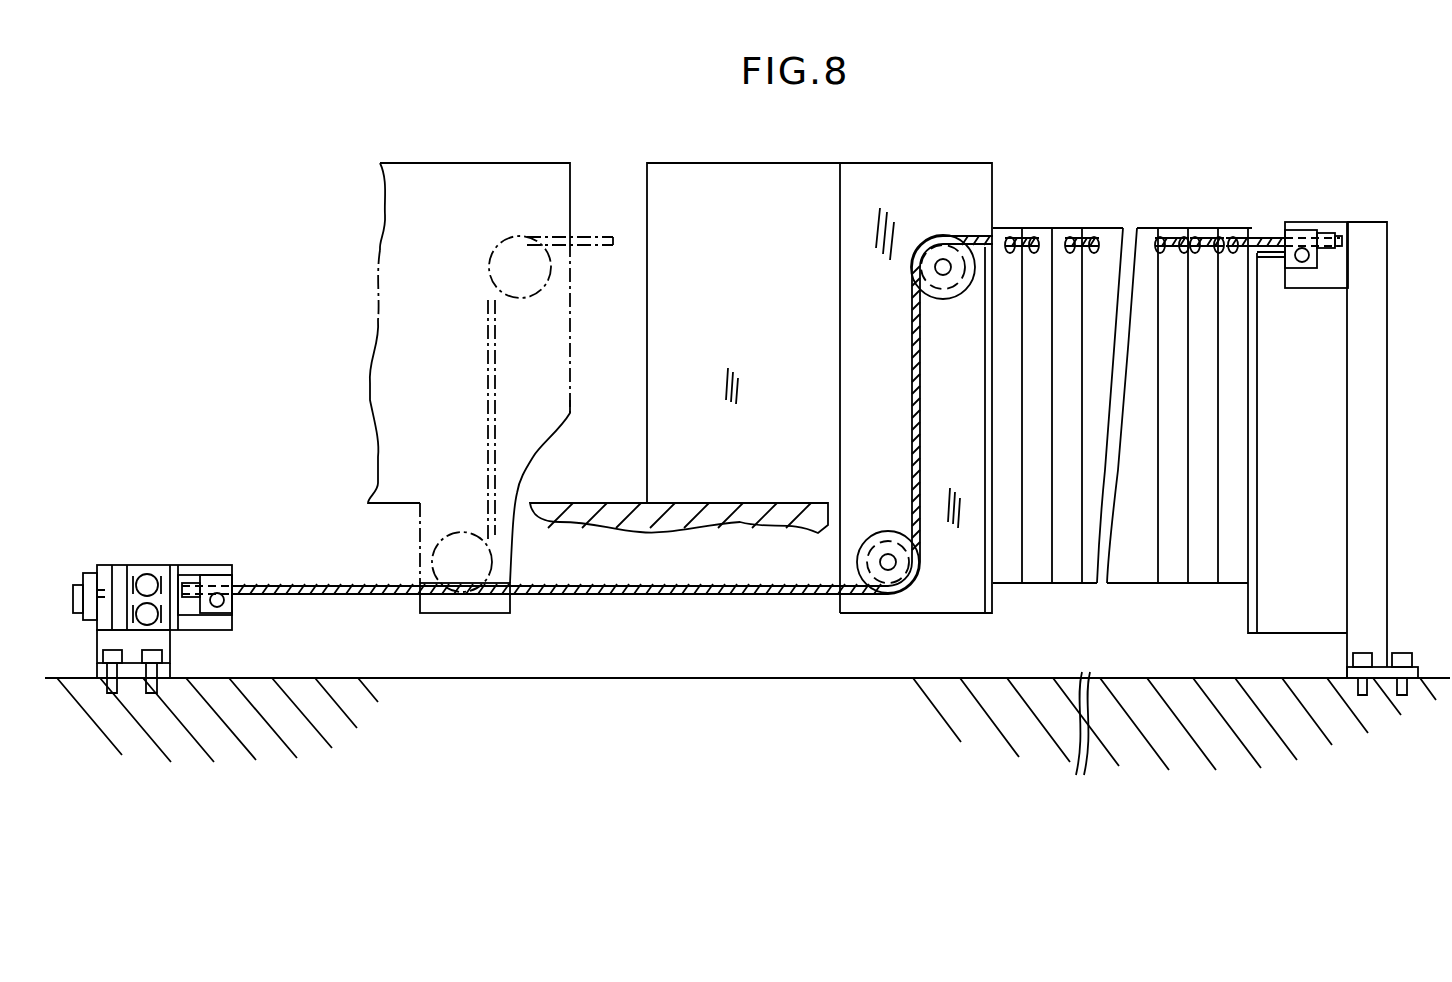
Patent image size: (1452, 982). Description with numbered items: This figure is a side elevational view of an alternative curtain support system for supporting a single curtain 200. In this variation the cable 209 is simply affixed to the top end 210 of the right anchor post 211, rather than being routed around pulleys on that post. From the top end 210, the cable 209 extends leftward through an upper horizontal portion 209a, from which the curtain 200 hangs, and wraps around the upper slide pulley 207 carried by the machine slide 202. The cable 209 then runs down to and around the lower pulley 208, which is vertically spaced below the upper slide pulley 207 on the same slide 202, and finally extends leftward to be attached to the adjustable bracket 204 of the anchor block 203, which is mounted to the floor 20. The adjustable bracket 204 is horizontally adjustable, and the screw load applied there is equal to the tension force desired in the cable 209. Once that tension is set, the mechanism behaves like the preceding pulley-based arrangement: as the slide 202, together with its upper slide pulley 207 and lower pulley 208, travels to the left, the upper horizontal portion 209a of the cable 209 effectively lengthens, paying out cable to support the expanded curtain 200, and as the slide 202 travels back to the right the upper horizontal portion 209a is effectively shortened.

The floor 20 is at (310, 677).
The curtain 200 is at (1073, 228).
The machine slide 202 is at (712, 315).
The anchor block 203 is at (172, 655).
The adjustable bracket 204 is at (183, 565).
The upper slide pulley 207 is at (948, 300).
The lower pulley 208 is at (886, 531).
The cable 209 is at (722, 583).
The upper horizontal portion 209a is at (1155, 233).
The top end 210 is at (1368, 222).
The right anchor post 211 is at (1388, 296).